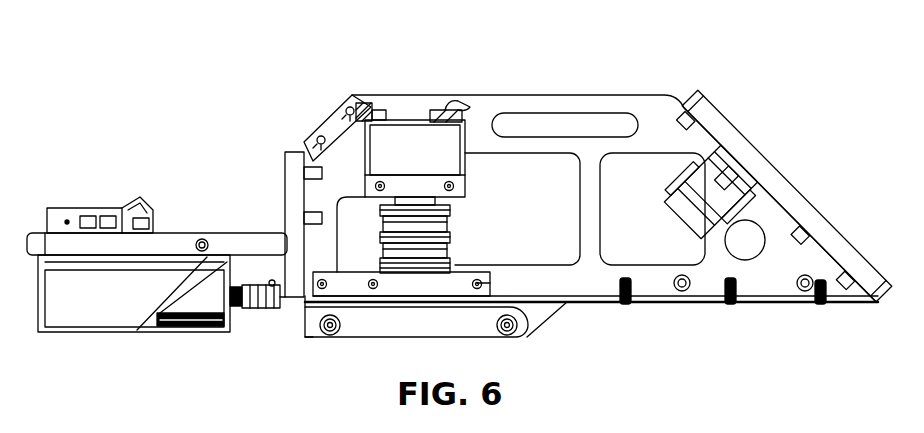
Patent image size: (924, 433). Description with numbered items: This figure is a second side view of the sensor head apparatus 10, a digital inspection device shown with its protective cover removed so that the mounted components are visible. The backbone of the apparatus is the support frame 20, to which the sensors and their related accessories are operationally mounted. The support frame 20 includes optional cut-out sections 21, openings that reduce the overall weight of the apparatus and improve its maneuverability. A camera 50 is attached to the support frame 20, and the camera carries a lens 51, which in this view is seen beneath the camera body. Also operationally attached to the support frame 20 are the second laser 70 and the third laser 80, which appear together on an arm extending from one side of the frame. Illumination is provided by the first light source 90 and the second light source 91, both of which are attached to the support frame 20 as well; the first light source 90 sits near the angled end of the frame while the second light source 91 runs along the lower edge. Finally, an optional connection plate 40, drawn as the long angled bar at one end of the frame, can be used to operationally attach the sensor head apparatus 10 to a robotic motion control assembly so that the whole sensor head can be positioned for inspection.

The sensor head apparatus 10 is at (341, 88).
The support frame 20 is at (658, 120).
The cut-out sections 21 is at (528, 125).
The connection plate 40 is at (828, 243).
The camera 50 is at (423, 142).
The lens 51 is at (390, 227).
The second laser 70 is at (107, 208).
The third laser 80 is at (115, 310).
The first light source 90 is at (742, 202).
The second light source 91 is at (358, 323).